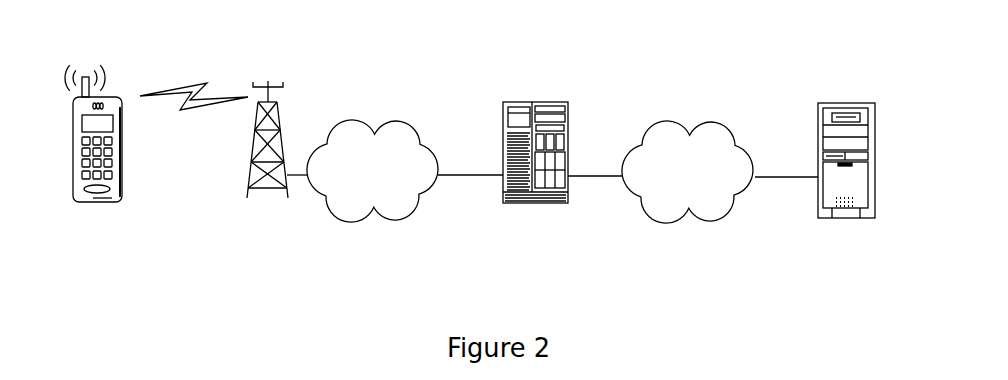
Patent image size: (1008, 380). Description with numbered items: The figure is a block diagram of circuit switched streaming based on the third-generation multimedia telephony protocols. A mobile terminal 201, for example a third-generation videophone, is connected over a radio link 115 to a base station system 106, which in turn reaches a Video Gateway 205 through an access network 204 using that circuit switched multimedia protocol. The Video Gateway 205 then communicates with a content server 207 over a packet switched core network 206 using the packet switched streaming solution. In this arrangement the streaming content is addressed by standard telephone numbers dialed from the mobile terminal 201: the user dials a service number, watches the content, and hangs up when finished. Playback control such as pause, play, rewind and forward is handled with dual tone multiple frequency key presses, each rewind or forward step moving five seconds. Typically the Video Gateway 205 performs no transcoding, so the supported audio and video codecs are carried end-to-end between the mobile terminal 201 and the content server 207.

The mobile terminal 201 is at (87, 60).
The radio link 115 is at (162, 82).
The base station system 106 is at (274, 83).
The access network 204 is at (368, 120).
The Video Gateway 205 is at (535, 102).
The packet switched core network 206 is at (682, 122).
The content server 207 is at (863, 102).